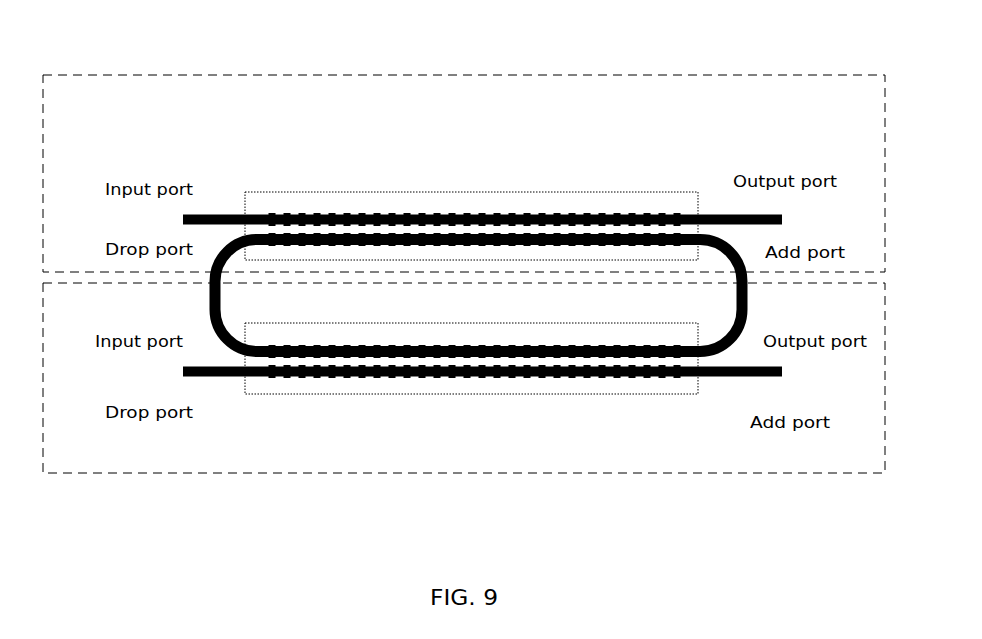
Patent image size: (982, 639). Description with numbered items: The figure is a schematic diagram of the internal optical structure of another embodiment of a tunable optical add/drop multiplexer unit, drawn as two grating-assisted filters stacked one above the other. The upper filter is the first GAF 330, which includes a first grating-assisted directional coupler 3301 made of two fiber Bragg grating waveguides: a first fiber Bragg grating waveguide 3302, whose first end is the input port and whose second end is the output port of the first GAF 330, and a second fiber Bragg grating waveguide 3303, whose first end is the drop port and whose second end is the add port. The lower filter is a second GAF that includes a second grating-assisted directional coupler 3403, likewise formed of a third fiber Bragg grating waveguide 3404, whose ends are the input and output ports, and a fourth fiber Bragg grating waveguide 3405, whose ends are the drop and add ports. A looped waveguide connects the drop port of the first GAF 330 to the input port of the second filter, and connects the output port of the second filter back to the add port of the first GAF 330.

The first GAF 330 is at (522, 75).
The first grating-assisted directional coupler 3301 is at (378, 192).
The first fiber Bragg grating waveguide 3302 is at (512, 215).
The second fiber Bragg grating waveguide 3303 is at (600, 233).
The second grating-assisted directional coupler 3403 is at (365, 323).
The third fiber Bragg grating waveguide 3404 is at (502, 345).
The fourth fiber Bragg grating waveguide 3405 is at (598, 365).